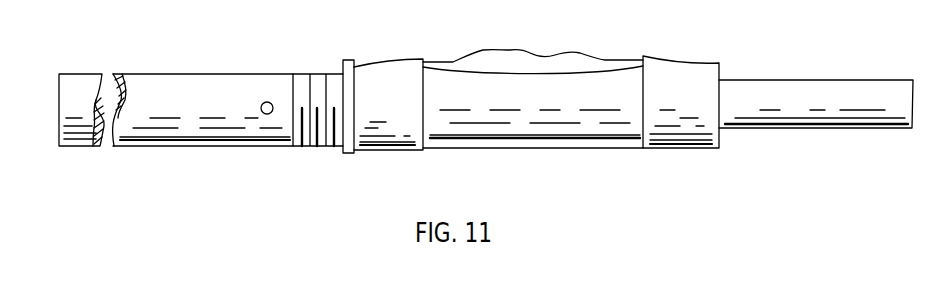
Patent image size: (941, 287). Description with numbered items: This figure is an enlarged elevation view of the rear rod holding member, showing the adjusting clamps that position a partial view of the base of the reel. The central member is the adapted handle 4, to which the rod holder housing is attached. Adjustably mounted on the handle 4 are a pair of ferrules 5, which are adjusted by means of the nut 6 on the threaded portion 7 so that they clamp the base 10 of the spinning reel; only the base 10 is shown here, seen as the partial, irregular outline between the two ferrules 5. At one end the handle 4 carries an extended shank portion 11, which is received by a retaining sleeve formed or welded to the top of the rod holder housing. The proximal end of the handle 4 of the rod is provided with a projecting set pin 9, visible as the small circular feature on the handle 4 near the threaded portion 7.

The handle 4 is at (183, 87).
The ferrules 5 is at (377, 65).
The nut 6 is at (343, 153).
The threaded portion 7 is at (313, 72).
The set pin 9 is at (267, 102).
The base 10 is at (523, 50).
The extended shank portion 11 is at (830, 80).